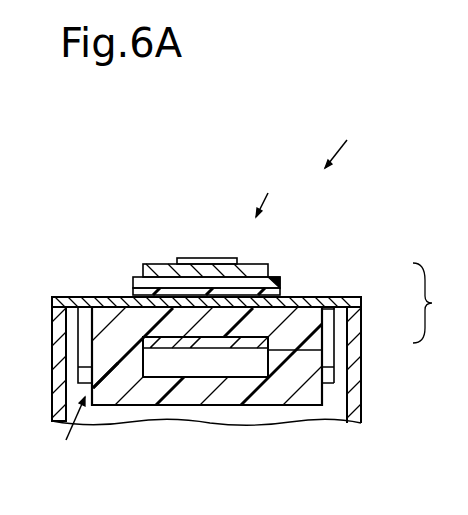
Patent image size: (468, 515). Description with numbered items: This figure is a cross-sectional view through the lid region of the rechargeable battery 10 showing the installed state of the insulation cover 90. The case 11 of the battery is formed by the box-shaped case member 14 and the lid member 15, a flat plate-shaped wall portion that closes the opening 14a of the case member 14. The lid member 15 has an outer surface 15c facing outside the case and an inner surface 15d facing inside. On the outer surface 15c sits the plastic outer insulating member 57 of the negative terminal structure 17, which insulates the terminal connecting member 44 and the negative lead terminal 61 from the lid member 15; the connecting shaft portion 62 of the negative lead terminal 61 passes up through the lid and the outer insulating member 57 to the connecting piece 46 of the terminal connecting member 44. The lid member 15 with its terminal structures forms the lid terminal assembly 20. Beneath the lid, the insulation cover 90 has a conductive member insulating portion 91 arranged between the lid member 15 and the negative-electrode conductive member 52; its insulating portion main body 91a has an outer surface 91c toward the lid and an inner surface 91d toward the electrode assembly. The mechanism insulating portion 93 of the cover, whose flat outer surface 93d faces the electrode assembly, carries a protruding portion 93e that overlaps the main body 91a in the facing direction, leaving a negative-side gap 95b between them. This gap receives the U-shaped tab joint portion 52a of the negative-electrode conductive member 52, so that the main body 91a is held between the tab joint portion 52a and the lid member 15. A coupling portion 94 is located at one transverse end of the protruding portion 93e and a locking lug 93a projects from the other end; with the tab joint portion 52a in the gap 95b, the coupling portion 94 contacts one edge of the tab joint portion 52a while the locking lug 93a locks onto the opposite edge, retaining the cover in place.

The rechargeable battery 10 is at (338, 141).
The case 11 is at (439, 303).
The case member 14 is at (362, 327).
The opening 14a is at (350, 343).
The lid member 15 is at (362, 303).
The outer surface 15c is at (343, 297).
The inner surface 15d is at (322, 300).
The negative terminal structure 17 is at (269, 193).
The lid terminal assembly 20 is at (69, 433).
The terminal connecting member 44 is at (140, 280).
The connecting piece 46 is at (166, 263).
The negative-electrode conductive member 52 is at (173, 350).
The tab joint portion 52a is at (220, 342).
The outer insulating member 57 is at (272, 280).
The negative lead terminal 61 is at (190, 262).
The connecting shaft portion 62 is at (222, 258).
The insulation cover 90 is at (80, 318).
The conductive member insulating portion 91 is at (298, 320).
The insulating portion main body 91a is at (340, 362).
The outer surface 91c is at (113, 297).
The inner surface 91d is at (294, 358).
The mechanism insulating portion 93 is at (148, 396).
The locking lug 93a is at (327, 384).
The outer surface 93d is at (263, 395).
The protruding portion 93e is at (147, 372).
The coupling portion 94 is at (103, 345).
The negative-side gap 95b is at (208, 367).